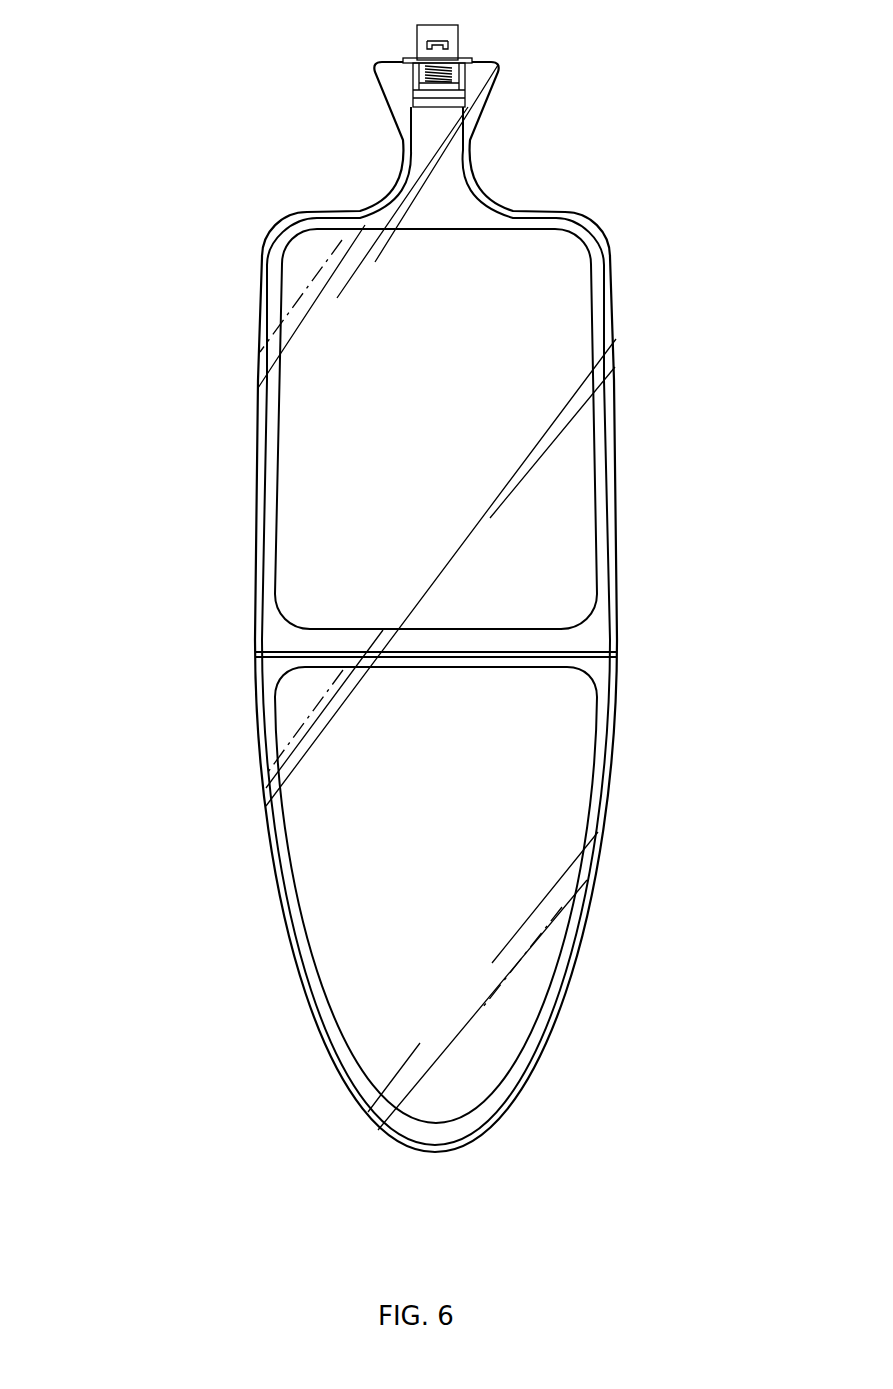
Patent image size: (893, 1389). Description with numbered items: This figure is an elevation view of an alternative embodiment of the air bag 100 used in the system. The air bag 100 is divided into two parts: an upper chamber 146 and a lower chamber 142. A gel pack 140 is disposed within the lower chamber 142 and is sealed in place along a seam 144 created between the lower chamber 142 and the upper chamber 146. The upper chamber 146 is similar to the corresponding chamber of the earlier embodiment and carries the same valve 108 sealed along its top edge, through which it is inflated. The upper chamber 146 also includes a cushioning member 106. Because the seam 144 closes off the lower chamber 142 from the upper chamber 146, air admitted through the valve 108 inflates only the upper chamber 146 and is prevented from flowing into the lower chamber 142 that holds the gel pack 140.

The air bag 100 is at (397, 581).
The cushioning member 106 is at (338, 403).
The valve 108 is at (460, 57).
The gel pack 140 is at (558, 800).
The lower chamber 142 is at (500, 1104).
The seam 144 is at (587, 653).
The upper chamber 146 is at (596, 237).